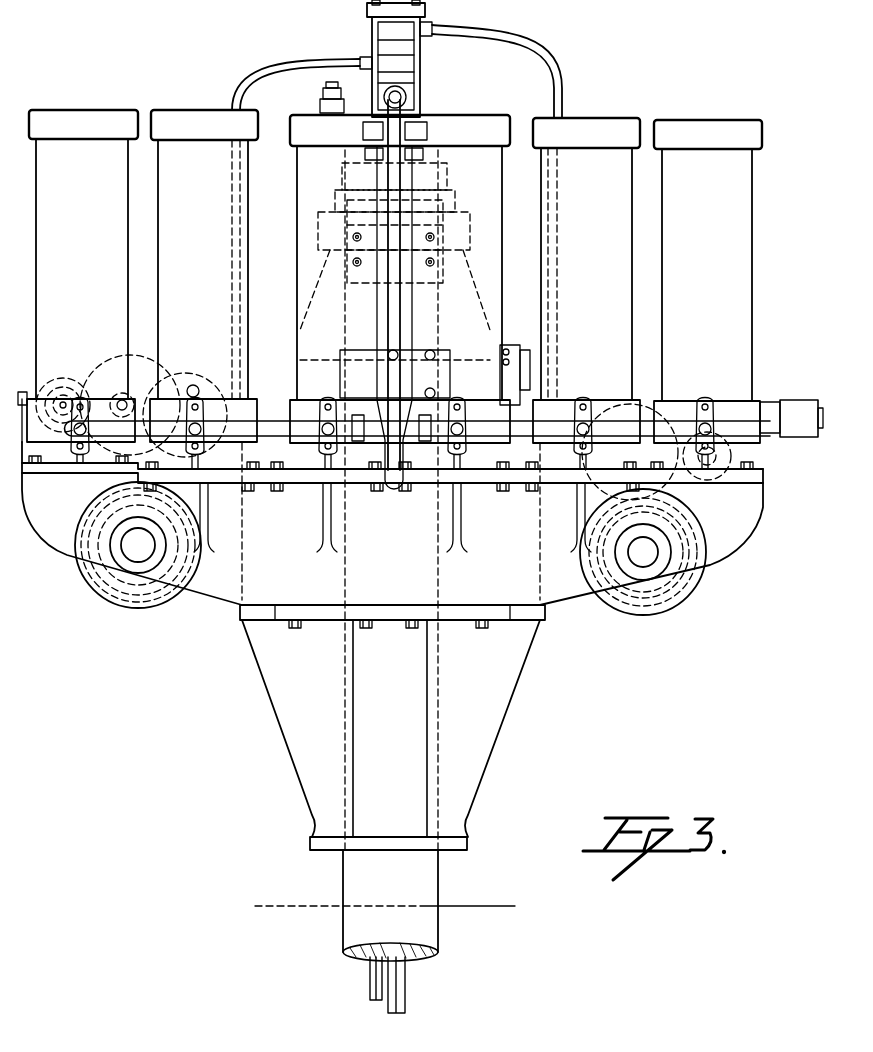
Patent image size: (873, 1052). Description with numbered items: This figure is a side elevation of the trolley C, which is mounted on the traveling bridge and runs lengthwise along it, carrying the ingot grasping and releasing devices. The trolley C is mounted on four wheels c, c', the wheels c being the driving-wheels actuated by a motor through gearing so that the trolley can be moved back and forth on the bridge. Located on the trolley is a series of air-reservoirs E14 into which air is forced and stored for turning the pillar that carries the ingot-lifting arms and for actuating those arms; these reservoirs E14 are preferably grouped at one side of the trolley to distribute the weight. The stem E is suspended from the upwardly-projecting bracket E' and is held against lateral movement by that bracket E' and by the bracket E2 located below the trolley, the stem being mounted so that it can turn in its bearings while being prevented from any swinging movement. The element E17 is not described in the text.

The air-reservoirs E14 is at (394, 276).
The piston and valve mechanism E17 is at (411, 475).
The upwardly-projecting bracket E' is at (397, 221).
The trolley C is at (420, 487).
The driving-wheels c is at (646, 552).
The wheels c' is at (138, 561).
The bracket E2 is at (391, 735).
The stem E is at (382, 931).